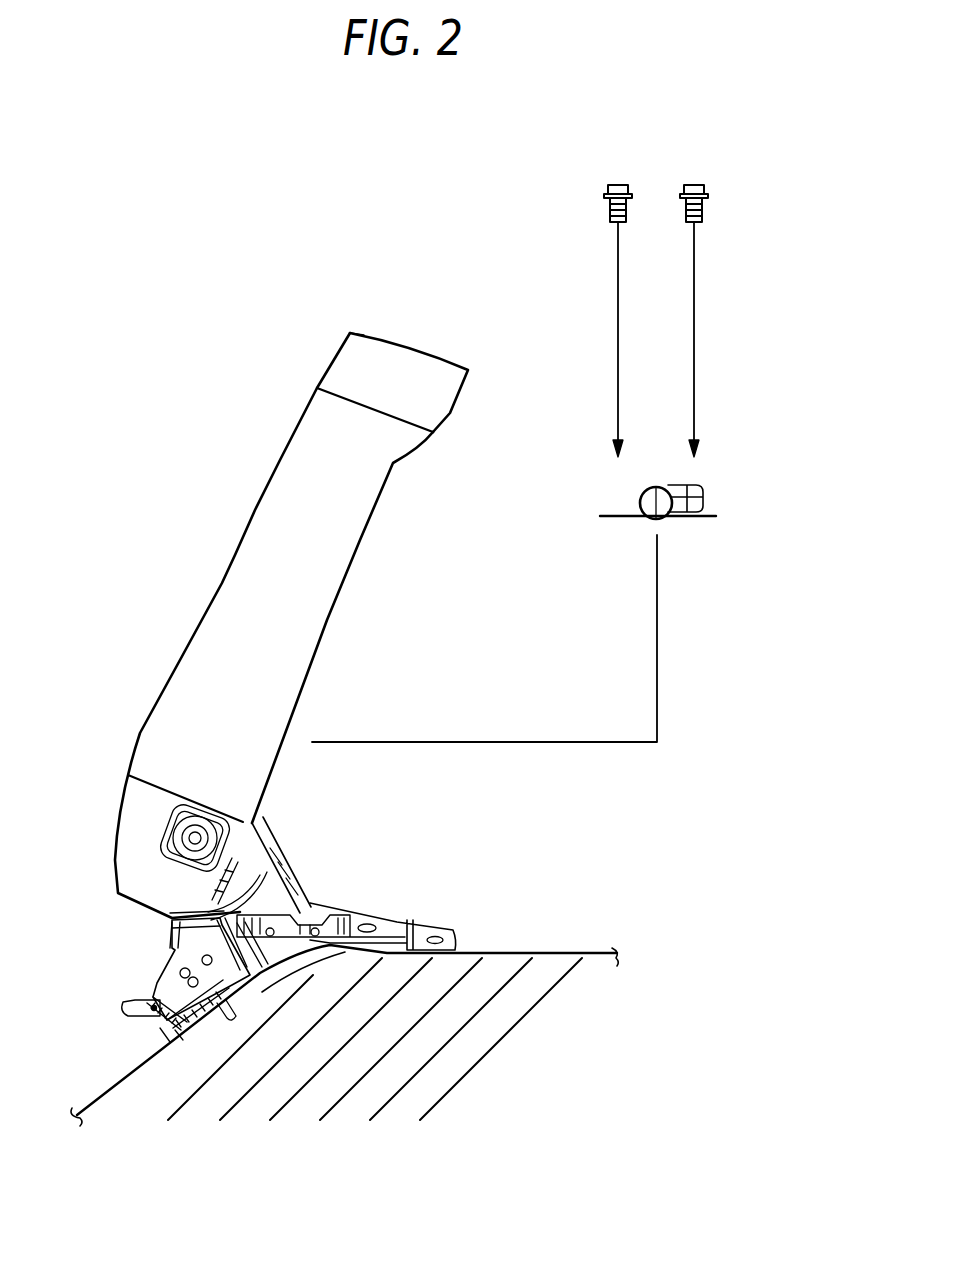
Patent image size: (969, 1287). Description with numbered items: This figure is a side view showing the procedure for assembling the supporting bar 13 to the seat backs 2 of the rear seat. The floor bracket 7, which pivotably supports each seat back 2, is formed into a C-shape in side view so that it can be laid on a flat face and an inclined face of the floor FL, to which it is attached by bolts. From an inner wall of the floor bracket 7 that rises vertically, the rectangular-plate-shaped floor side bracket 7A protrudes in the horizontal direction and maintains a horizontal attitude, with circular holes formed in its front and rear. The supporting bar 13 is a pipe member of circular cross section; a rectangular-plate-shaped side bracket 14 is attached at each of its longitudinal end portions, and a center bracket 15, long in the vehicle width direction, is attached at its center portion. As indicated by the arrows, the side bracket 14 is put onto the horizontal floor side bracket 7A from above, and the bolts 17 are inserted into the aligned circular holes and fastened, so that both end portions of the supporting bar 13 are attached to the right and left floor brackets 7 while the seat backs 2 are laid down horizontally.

The seat back 2 is at (223, 587).
The floor bracket 7 is at (160, 970).
The floor side bracket 7A is at (312, 742).
The supporting bar 13 is at (648, 526).
The side bracket 14 is at (612, 516).
The center bracket 15 is at (700, 484).
The bolt 17 is at (609, 213).
The floor FL is at (583, 953).